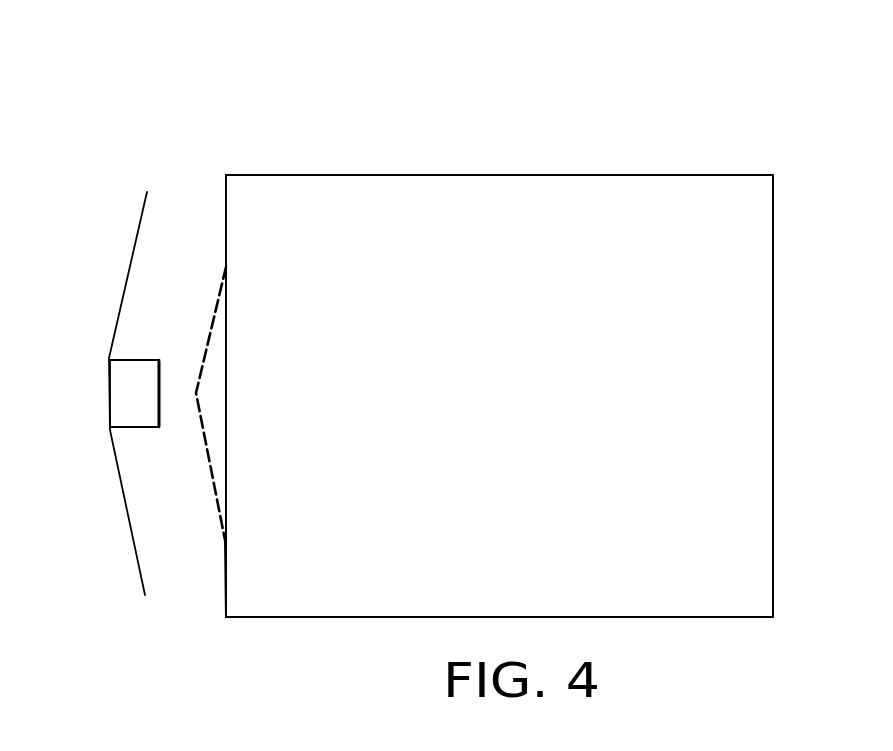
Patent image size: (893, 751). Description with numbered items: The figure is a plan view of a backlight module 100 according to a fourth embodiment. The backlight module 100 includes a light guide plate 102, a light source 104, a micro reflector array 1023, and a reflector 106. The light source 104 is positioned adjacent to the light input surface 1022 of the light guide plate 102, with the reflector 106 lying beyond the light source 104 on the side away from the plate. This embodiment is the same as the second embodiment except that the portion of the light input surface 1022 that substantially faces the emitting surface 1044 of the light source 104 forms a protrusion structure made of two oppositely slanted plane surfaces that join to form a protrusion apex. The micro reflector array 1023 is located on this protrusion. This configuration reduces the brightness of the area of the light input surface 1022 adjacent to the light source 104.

The backlight module 100 is at (368, 57).
The light guide plate 102 is at (583, 165).
The light input surface 1022 is at (218, 194).
The micro reflector array 1023 is at (208, 503).
The light source 104 is at (138, 390).
The emitting surface 1044 is at (168, 426).
The reflector 106 is at (128, 270).